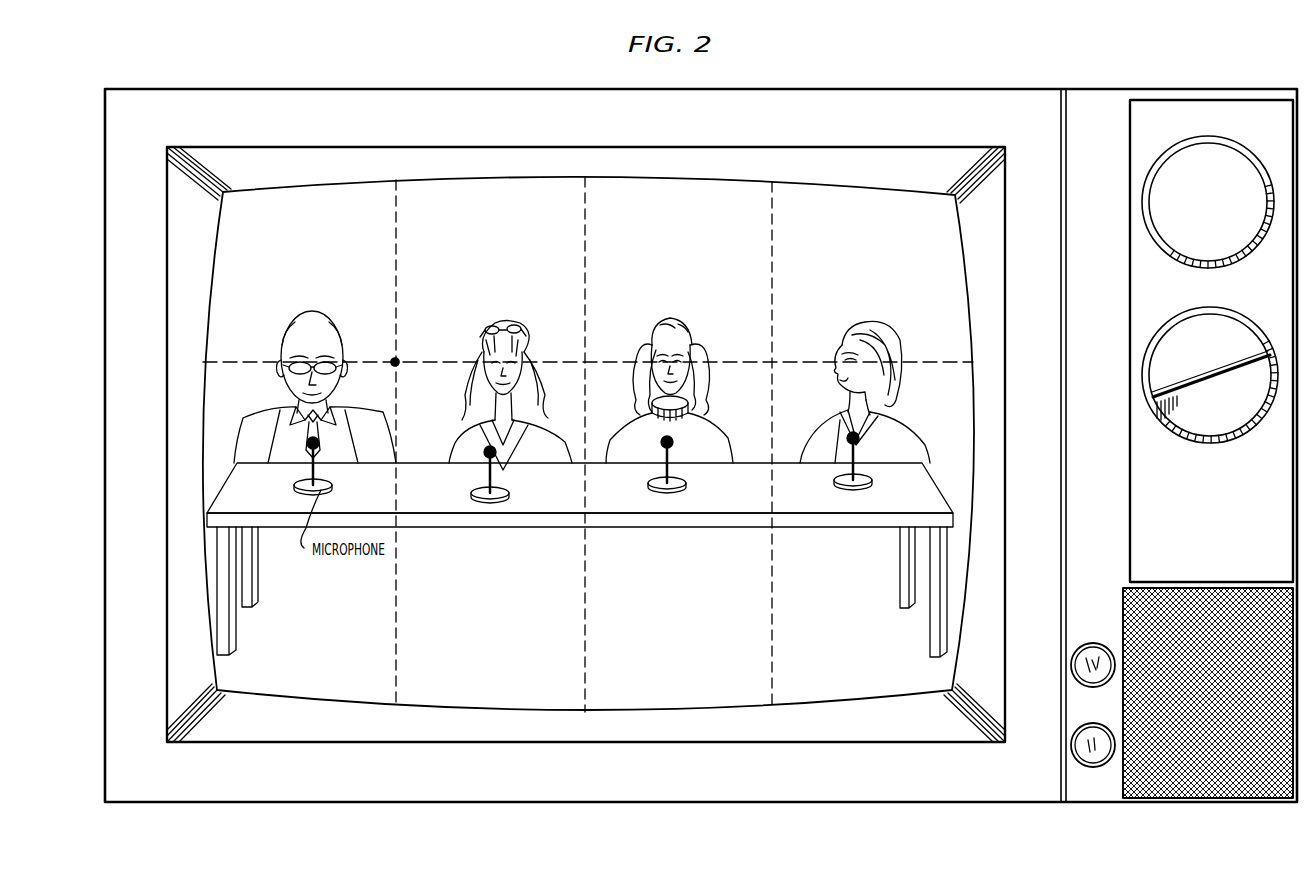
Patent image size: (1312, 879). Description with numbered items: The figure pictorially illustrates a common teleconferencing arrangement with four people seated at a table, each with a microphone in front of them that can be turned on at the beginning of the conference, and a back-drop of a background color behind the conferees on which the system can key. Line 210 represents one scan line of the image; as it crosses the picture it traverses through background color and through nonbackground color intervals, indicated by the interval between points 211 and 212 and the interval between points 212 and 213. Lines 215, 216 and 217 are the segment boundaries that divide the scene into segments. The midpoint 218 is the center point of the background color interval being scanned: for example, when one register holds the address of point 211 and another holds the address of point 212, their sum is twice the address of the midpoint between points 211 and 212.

The scan line 210 is at (953, 362).
The point 211 is at (345, 362).
The point 212 is at (465, 370).
The point 213 is at (537, 362).
The segment boundary 215 is at (397, 213).
The segment boundary 216 is at (586, 213).
The segment boundary 217 is at (773, 213).
The midpoint 218 is at (396, 361).